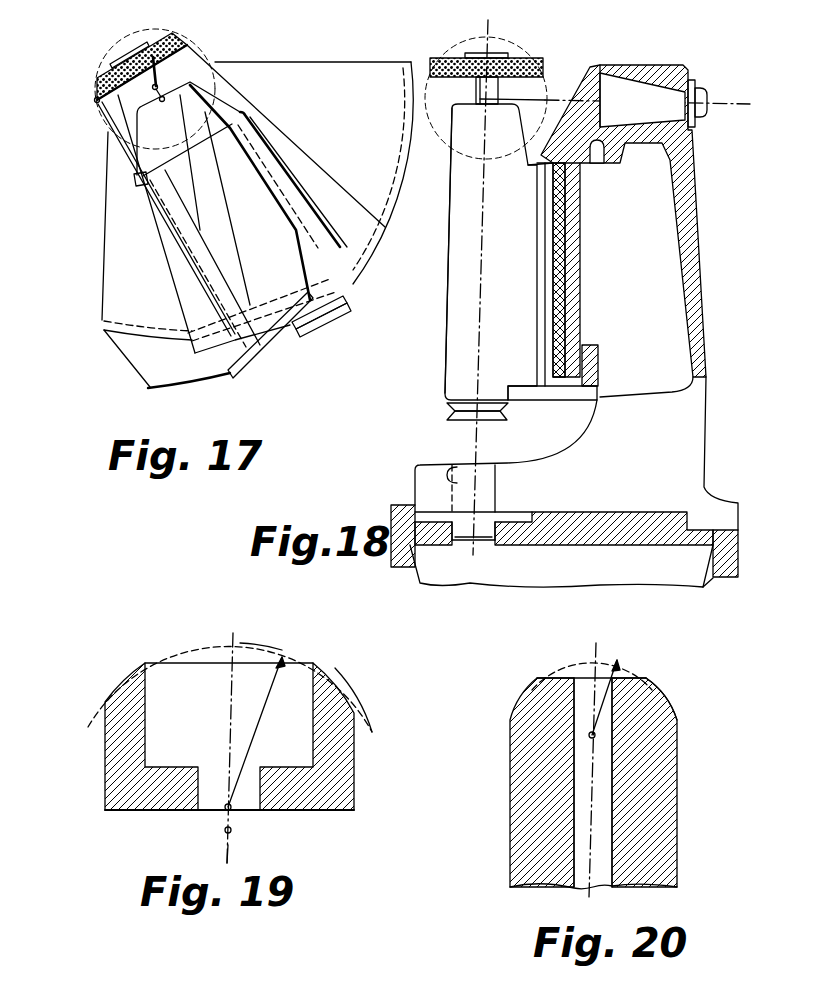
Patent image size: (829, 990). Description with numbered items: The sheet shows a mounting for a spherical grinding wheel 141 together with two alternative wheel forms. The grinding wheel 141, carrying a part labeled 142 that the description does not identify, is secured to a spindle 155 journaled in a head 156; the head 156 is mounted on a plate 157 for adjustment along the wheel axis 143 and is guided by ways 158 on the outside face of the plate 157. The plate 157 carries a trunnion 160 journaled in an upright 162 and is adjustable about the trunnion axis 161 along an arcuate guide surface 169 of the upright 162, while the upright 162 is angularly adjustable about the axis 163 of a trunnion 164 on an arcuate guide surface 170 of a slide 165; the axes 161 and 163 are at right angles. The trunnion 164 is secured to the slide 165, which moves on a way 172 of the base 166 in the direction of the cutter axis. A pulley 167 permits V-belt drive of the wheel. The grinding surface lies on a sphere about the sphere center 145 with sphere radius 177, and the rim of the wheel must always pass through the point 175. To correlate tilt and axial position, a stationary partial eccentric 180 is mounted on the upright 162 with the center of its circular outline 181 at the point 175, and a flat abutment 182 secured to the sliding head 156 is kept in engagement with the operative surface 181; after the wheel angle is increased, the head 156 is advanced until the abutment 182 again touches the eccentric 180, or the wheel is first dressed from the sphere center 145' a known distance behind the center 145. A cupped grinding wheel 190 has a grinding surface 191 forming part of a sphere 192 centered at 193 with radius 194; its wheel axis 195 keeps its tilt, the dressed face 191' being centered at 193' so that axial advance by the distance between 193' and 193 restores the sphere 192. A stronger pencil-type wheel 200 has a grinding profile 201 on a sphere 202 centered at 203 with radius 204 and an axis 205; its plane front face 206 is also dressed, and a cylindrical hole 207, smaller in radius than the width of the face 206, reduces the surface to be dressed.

In FIG. 17, the grinding wheel 141 is at (176, 38).
In FIG. 18, the grinding wheel 141 is at (522, 66).
In FIG. 17, the wheel hub 142 is at (128, 55).
In FIG. 18, the wheel hub 142 is at (508, 52).
In FIG. 17, the wheel axis 143 is at (256, 238).
In FIG. 18, the wheel axis 143 is at (481, 276).
In FIG. 17, the sphere center 145 is at (205, 65).
In FIG. 17, the sphere center position for dressing 145' is at (215, 84).
In FIG. 18, the spindle 155 is at (478, 92).
In FIG. 17, the head 156 is at (268, 192).
In FIG. 18, the head 156 is at (449, 288).
In FIG. 17, the plate 157 is at (322, 192).
In FIG. 18, the plate 157 is at (560, 298).
In FIG. 18, the ways 158 is at (535, 166).
In FIG. 18, the trunnion 160 is at (640, 85).
In FIG. 18, the trunnion axis 161 is at (601, 68).
In FIG. 18, the upright 162 is at (693, 285).
In FIG. 18, the trunnion axis 163 is at (476, 458).
In FIG. 18, the trunnion 164 is at (450, 478).
In FIG. 18, the slide 165 is at (733, 543).
In FIG. 18, the base 166 is at (672, 582).
In FIG. 17, the pulley 167 is at (335, 333).
In FIG. 18, the pulley 167 is at (447, 410).
In FIG. 17, the arcuate guide surface 169 is at (325, 63).
In FIG. 18, the arcuate guide surface 169 is at (570, 266).
In FIG. 18, the arcuate guide surface 170 is at (645, 513).
In FIG. 18, the way 172 is at (575, 572).
In FIG. 17, the point 175 is at (95, 102).
In FIG. 17, the sphere radius 177 is at (133, 166).
In FIG. 17, the stationary partial eccentric 180 is at (165, 372).
In FIG. 18, the stationary partial eccentric 180 is at (614, 362).
In FIG. 17, the circular outline 181 is at (207, 385).
In FIG. 17, the flat abutment 182 is at (244, 372).
In FIG. 18, the flat abutment 182 is at (590, 400).
In FIG. 19, the cupped grinding wheel 190 is at (355, 784).
In FIG. 19, the grinding surface 191 is at (230, 688).
In FIG. 19, the operative grinding face after dressings 191' is at (375, 700).
In FIG. 19, the sphere 192 is at (268, 650).
In FIG. 19, the sphere center 193 is at (253, 825).
In FIG. 19, the sphere center after dressings 193' is at (198, 835).
In FIG. 19, the radius 194 is at (258, 727).
In FIG. 19, the wheel axis 195 is at (225, 856).
In FIG. 20, the grinding wheel 200 is at (657, 803).
In FIG. 20, the grinding profile 201 is at (690, 694).
In FIG. 20, the sphere 202 is at (640, 675).
In FIG. 20, the sphere center 203 is at (589, 736).
In FIG. 20, the radius 204 is at (615, 662).
In FIG. 20, the wheel axis 205 is at (588, 873).
In FIG. 20, the plane front face 206 is at (550, 678).
In FIG. 20, the cylindrical hole 207 is at (566, 873).